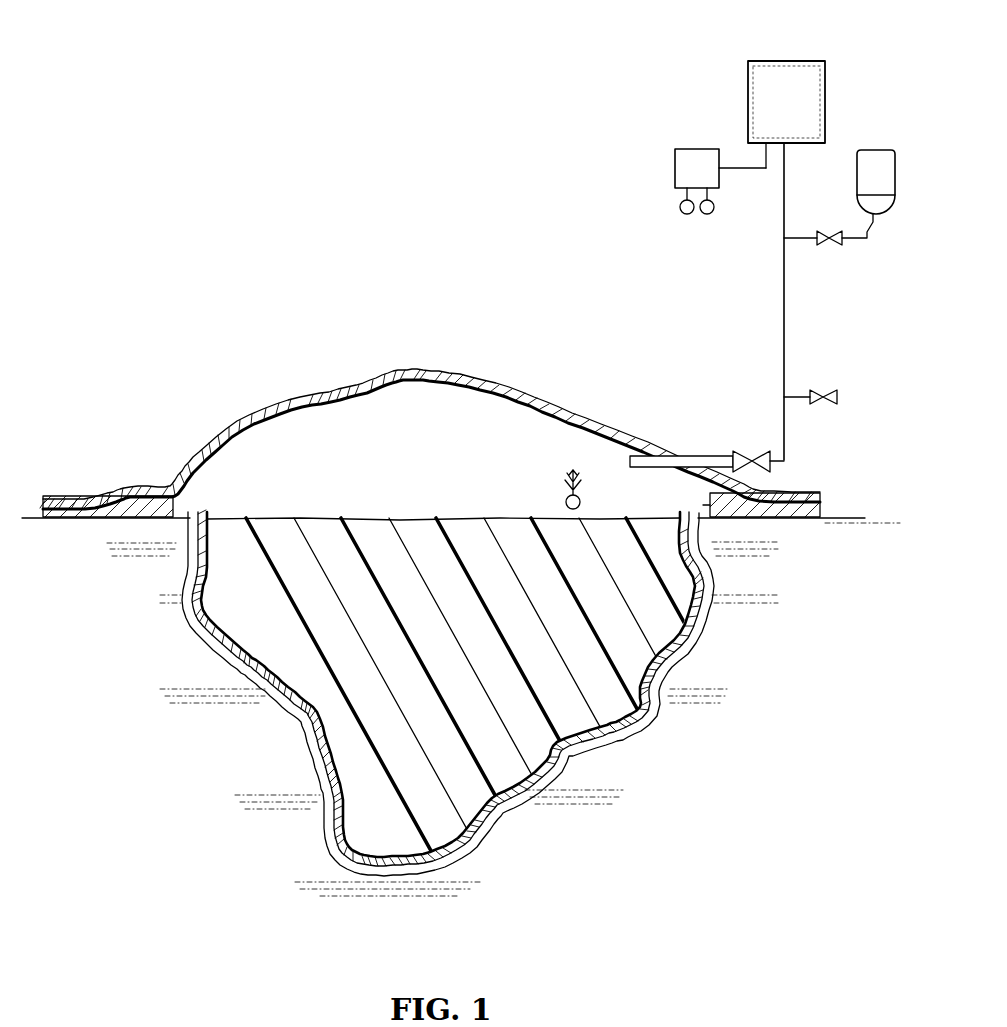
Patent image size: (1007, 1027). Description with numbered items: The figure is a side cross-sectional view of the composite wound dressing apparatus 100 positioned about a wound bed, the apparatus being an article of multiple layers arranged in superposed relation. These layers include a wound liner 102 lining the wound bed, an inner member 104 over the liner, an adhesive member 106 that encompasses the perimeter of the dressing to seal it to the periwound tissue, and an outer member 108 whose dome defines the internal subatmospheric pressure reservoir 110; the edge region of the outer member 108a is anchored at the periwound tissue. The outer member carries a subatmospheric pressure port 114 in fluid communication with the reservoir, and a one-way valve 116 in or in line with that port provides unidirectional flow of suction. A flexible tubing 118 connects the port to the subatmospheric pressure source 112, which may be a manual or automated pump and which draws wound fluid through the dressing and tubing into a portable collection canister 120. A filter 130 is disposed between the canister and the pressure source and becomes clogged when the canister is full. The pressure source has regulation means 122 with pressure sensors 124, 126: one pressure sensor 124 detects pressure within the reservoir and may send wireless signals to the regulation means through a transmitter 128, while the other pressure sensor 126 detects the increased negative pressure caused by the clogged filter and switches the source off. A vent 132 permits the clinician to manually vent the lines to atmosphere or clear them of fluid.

The composite wound dressing apparatus 100 is at (213, 389).
The wound liner 102 is at (665, 672).
The inner member 104 is at (613, 633).
The adhesive member 106 is at (120, 502).
The outer member 108 is at (290, 402).
The right anchor / membrane edge 108a is at (780, 491).
The subatmospheric pressure reservoir 110 is at (407, 440).
The subatmospheric pressure source 112 is at (792, 77).
The subatmospheric pressure port 114 is at (678, 458).
The one-way valve 116 is at (752, 453).
The flexible tubing 118 is at (785, 305).
The collection canister 120 is at (877, 150).
The regulation means 122 is at (695, 158).
The pressure sensor 124 is at (682, 204).
The pressure sensor 126 is at (712, 214).
The transmitter 128 is at (579, 484).
The filter 130 is at (822, 247).
The vent 132 is at (840, 397).